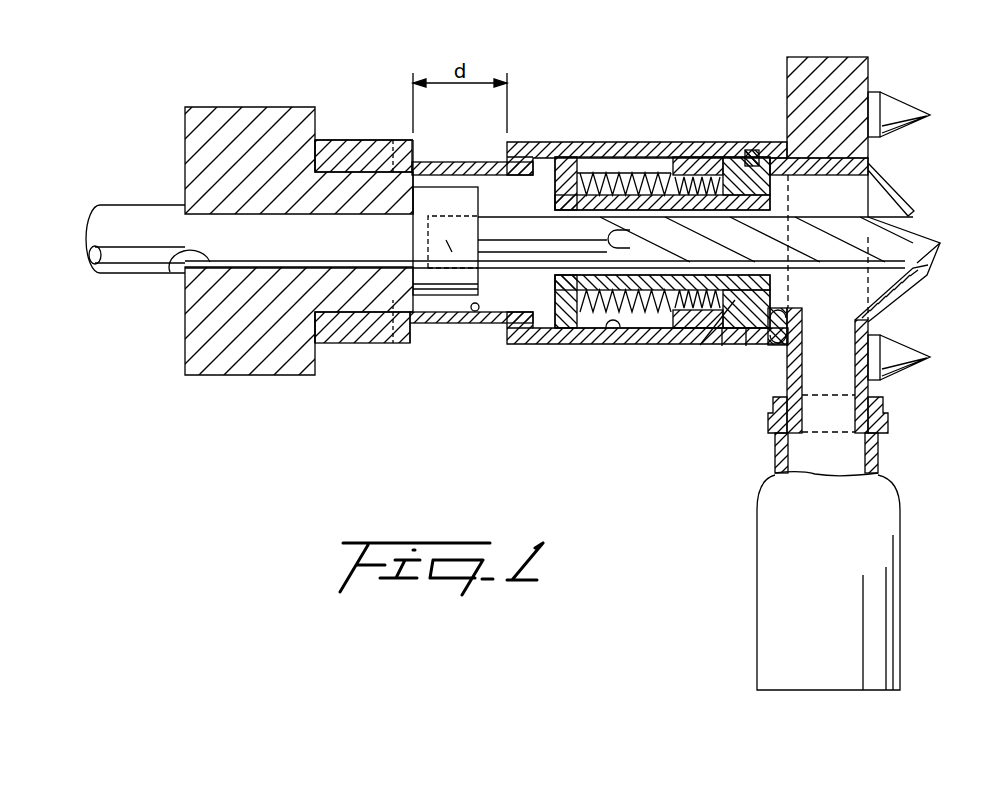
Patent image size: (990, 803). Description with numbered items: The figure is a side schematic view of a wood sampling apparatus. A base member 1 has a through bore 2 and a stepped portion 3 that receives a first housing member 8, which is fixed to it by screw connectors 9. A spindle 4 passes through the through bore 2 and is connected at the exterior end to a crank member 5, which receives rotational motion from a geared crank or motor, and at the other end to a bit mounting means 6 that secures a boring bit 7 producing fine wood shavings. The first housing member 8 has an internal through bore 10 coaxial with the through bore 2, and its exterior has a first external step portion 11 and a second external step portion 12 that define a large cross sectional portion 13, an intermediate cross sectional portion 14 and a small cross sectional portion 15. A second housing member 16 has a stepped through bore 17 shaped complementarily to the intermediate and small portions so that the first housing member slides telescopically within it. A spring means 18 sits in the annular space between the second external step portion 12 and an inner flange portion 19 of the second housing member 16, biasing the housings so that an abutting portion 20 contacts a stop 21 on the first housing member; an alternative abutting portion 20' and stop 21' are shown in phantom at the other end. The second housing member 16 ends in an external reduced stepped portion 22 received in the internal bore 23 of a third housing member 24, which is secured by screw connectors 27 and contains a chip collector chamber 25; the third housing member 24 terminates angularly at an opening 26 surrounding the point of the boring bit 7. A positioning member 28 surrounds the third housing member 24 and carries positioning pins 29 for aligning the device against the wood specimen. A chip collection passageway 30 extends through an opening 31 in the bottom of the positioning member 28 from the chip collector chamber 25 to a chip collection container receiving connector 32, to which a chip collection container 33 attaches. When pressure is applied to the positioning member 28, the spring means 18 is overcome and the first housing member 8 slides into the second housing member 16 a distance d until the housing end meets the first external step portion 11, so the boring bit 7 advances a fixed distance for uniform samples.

The base member 1 is at (208, 377).
The through bore 2 is at (168, 273).
The stepped portion 3 is at (332, 347).
The spindle 4 is at (356, 230).
The crank member 5 is at (132, 216).
The bit mounting means 6 is at (453, 295).
The boring bit 7 is at (523, 233).
The first housing member 8 is at (363, 345).
The screw connectors 9 is at (393, 345).
The internal through bore 10 is at (485, 325).
The first external step portion 11 is at (413, 325).
The second external step portion 12 is at (588, 348).
The large cross sectional portion 13 is at (328, 178).
The intermediate cross sectional portion 14 is at (563, 175).
The small cross sectional portion 15 is at (690, 180).
The second housing member 16 is at (647, 348).
The stepped through bore 17 is at (620, 330).
The spring means 18 is at (632, 178).
The inner flange portion 19 is at (697, 357).
The abutting portion 20 is at (687, 269).
The abutting portion 20' is at (712, 371).
The stop 21 is at (511, 277).
The stop 21' is at (735, 355).
The external reduced stepped portion 22 is at (703, 346).
The internal bore 23 is at (778, 346).
The third housing member 24 is at (728, 150).
The chip collector chamber 25 is at (813, 308).
The opening 26 is at (912, 212).
The screw connectors 27 is at (752, 160).
The positioning member 28 is at (826, 57).
The positioning pins 29 is at (902, 108).
The chip collection passageway 30 is at (813, 356).
The opening 31 is at (880, 455).
The chip collection container receiving connector 32 is at (883, 402).
The chip collection container 33 is at (873, 628).